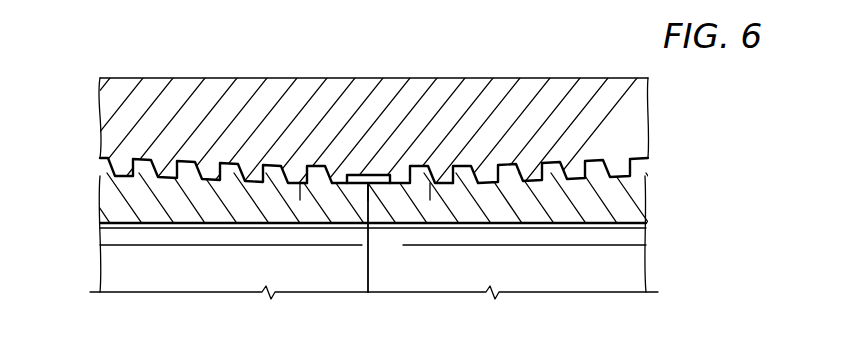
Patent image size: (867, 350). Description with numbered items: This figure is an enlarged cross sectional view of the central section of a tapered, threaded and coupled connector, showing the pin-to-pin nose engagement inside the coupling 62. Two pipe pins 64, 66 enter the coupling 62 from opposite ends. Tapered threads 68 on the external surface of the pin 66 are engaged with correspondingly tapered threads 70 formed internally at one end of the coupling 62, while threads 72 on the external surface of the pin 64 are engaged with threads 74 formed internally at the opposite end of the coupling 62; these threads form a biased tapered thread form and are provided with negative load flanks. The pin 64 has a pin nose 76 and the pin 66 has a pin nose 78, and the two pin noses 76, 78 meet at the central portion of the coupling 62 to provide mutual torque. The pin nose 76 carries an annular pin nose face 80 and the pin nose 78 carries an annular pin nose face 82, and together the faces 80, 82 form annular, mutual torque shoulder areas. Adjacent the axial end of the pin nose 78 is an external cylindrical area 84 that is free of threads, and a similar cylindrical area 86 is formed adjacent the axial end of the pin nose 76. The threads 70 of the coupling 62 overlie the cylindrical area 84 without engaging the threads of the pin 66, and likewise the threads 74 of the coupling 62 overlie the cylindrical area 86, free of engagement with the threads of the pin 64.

The coupling 62 is at (208, 97).
The pipe pin 64 is at (110, 196).
The pipe pin 66 is at (640, 198).
The tapered threads 68 is at (640, 232).
The tapered threads 70 is at (402, 172).
The threads 72 is at (108, 230).
The threads 74 is at (342, 170).
The pin nose 76 is at (310, 203).
The pin nose 78 is at (417, 207).
The annular pin nose face 80 is at (366, 203).
The annular pin nose face 82 is at (371, 206).
The external cylindrical area 84 is at (446, 172).
The cylindrical area 86 is at (318, 167).